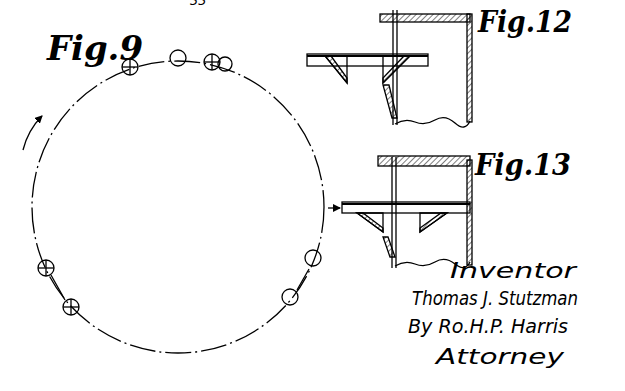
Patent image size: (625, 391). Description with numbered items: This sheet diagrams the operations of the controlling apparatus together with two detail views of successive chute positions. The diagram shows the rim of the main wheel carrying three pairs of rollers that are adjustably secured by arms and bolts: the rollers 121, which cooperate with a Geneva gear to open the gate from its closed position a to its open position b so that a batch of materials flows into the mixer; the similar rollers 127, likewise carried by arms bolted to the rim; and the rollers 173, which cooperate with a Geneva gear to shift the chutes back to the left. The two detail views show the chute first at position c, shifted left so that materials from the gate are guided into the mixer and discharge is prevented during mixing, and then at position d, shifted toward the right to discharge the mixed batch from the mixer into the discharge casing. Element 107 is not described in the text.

In FIG. 9, the rollers 127 is at (182, 50).
In FIG. 9, the rollers 173 is at (72, 299).
In FIG. 9, the rollers 121 is at (291, 323).
In FIG. 12, the track rail 107 is at (421, 11).
In FIG. 9, the chute position c is at (188, 57).
In FIG. 12, the chute position c is at (392, 55).
In FIG. 9, the chute position d is at (139, 75).
In FIG. 13, the chute position d is at (384, 202).
In FIG. 9, the gate position a is at (63, 307).
In FIG. 9, the gate position b is at (316, 268).